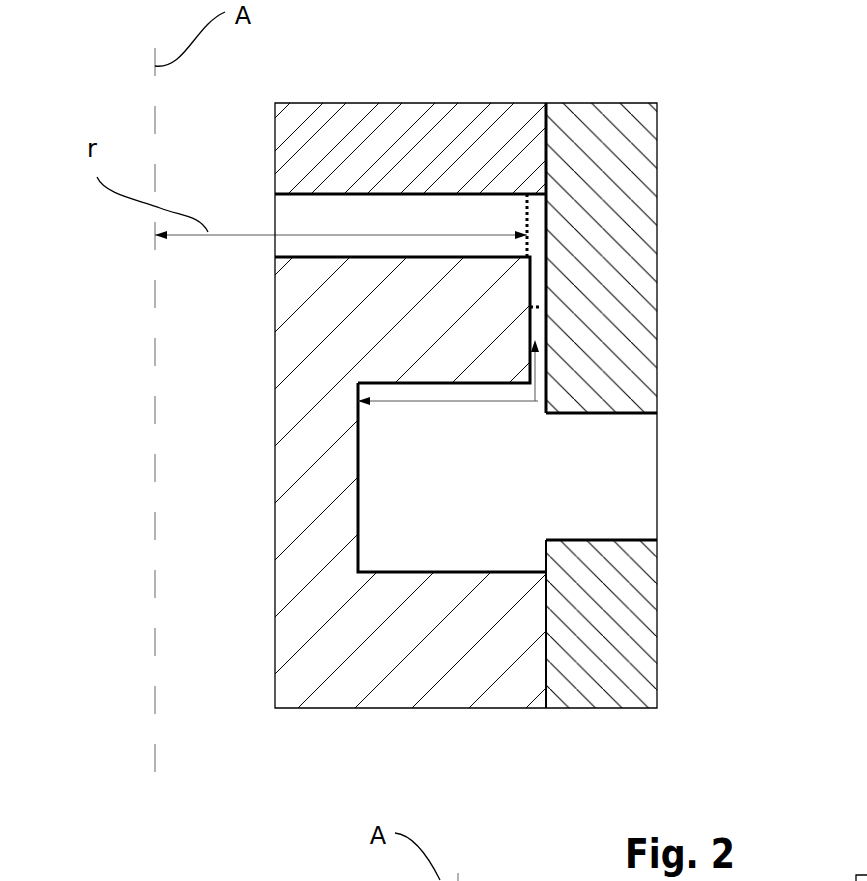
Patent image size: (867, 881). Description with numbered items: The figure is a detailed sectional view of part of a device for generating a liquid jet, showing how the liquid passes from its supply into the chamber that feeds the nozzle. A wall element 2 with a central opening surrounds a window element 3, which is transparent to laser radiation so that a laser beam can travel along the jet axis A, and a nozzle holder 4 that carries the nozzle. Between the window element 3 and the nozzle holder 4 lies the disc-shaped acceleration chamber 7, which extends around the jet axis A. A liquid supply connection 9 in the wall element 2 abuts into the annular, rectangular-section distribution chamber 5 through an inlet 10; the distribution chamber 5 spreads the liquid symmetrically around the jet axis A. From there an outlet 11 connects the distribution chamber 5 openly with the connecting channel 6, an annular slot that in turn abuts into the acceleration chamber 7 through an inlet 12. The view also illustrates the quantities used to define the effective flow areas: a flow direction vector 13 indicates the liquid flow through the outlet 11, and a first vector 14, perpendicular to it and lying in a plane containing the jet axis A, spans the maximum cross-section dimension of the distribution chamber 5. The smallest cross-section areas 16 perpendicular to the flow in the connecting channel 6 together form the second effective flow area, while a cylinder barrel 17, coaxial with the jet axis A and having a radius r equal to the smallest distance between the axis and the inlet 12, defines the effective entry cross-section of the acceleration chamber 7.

The wall element 2 is at (640, 132).
The window element 3 is at (395, 113).
The nozzle holder 4 is at (420, 685).
The distribution chamber 5 is at (404, 485).
The connecting channel 6 is at (540, 287).
The acceleration chamber 7 is at (383, 208).
The liquid supply connection 9 is at (598, 472).
The inlet 10 is at (545, 503).
The outlet 11 is at (547, 378).
The inlet 12 is at (537, 253).
The flow direction vector 13 is at (533, 361).
The first vector 14 is at (417, 400).
The cross-section areas 16 is at (530, 308).
The cylinder barrel 17 is at (527, 192).